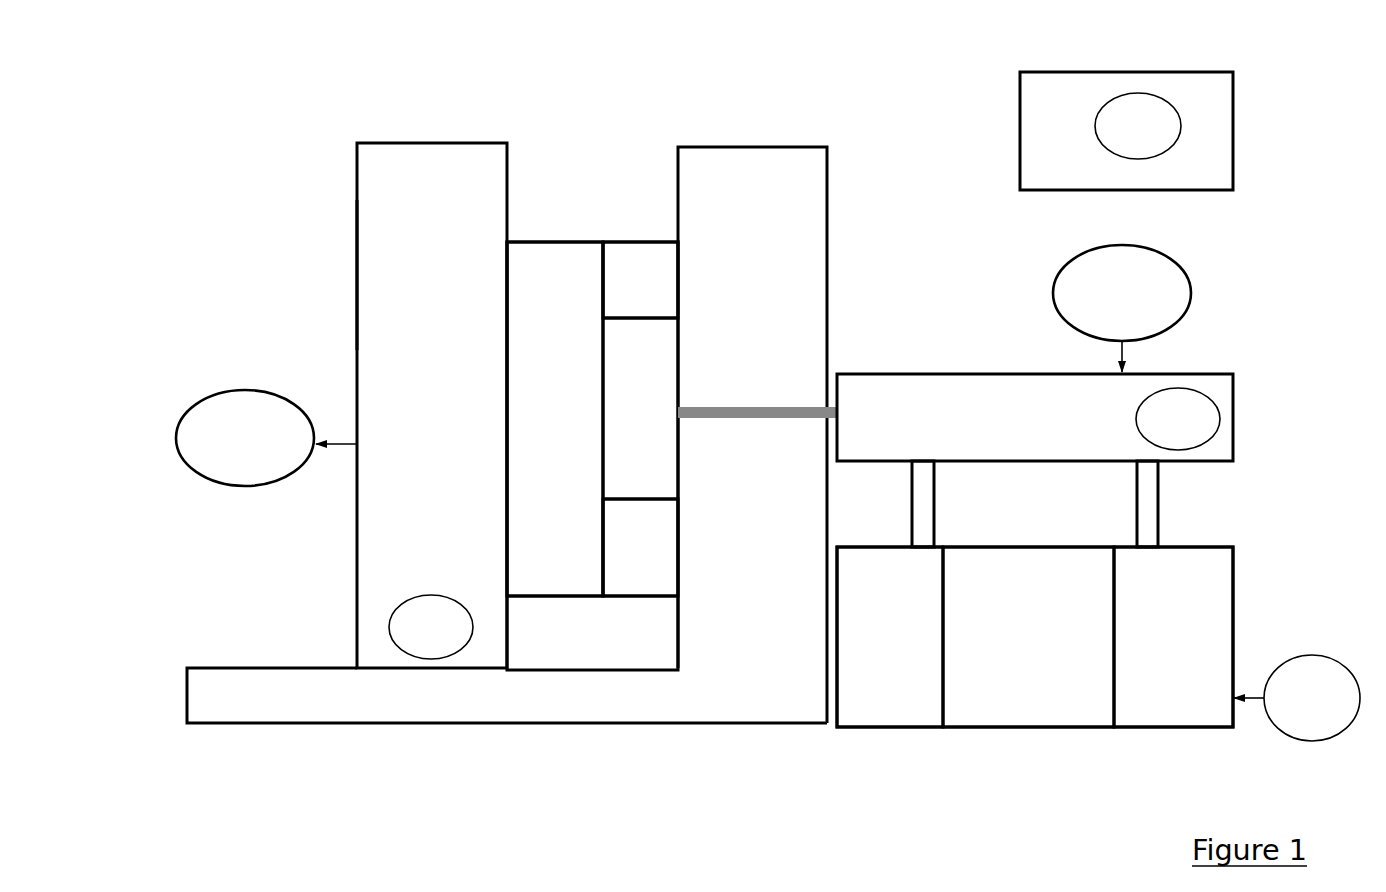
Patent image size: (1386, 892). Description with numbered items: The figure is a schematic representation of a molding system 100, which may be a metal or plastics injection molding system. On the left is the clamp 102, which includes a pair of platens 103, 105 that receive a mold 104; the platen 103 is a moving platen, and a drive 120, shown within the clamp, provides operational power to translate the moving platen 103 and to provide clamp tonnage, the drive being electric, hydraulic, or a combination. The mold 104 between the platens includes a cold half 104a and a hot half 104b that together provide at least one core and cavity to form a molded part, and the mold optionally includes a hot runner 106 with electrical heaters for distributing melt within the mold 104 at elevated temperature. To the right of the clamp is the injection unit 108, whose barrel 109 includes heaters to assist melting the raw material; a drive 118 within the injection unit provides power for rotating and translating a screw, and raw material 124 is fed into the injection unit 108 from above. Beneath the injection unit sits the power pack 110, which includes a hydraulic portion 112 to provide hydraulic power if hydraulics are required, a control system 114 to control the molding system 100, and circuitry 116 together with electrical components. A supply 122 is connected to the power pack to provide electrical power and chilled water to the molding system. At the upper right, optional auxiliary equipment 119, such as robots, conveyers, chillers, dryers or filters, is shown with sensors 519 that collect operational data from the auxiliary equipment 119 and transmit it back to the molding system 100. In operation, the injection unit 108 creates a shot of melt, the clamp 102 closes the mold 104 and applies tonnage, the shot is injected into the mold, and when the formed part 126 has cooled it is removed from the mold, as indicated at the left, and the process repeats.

The molding system 100 is at (757, 66).
The clamp 102 is at (343, 130).
The moving platen 103 is at (356, 272).
The mold 104 is at (568, 214).
The cold half 104a is at (548, 563).
The hot half 104b is at (633, 563).
The platen 105 is at (827, 147).
The hot runner 106 is at (635, 360).
The injection unit 108 is at (894, 336).
The barrel 109 is at (947, 373).
The power pack 110 is at (1247, 535).
The hydraulic portion 112 is at (908, 728).
The control system 114 is at (1037, 728).
The circuitry 116 is at (1178, 728).
The drive 118 is at (1222, 408).
The auxiliary equipment 119 is at (1263, 133).
The sensors 519 is at (1138, 126).
The drive 120 is at (431, 659).
The supply 122 is at (1290, 732).
The raw material 124 is at (1168, 262).
The formed part 126 is at (240, 388).